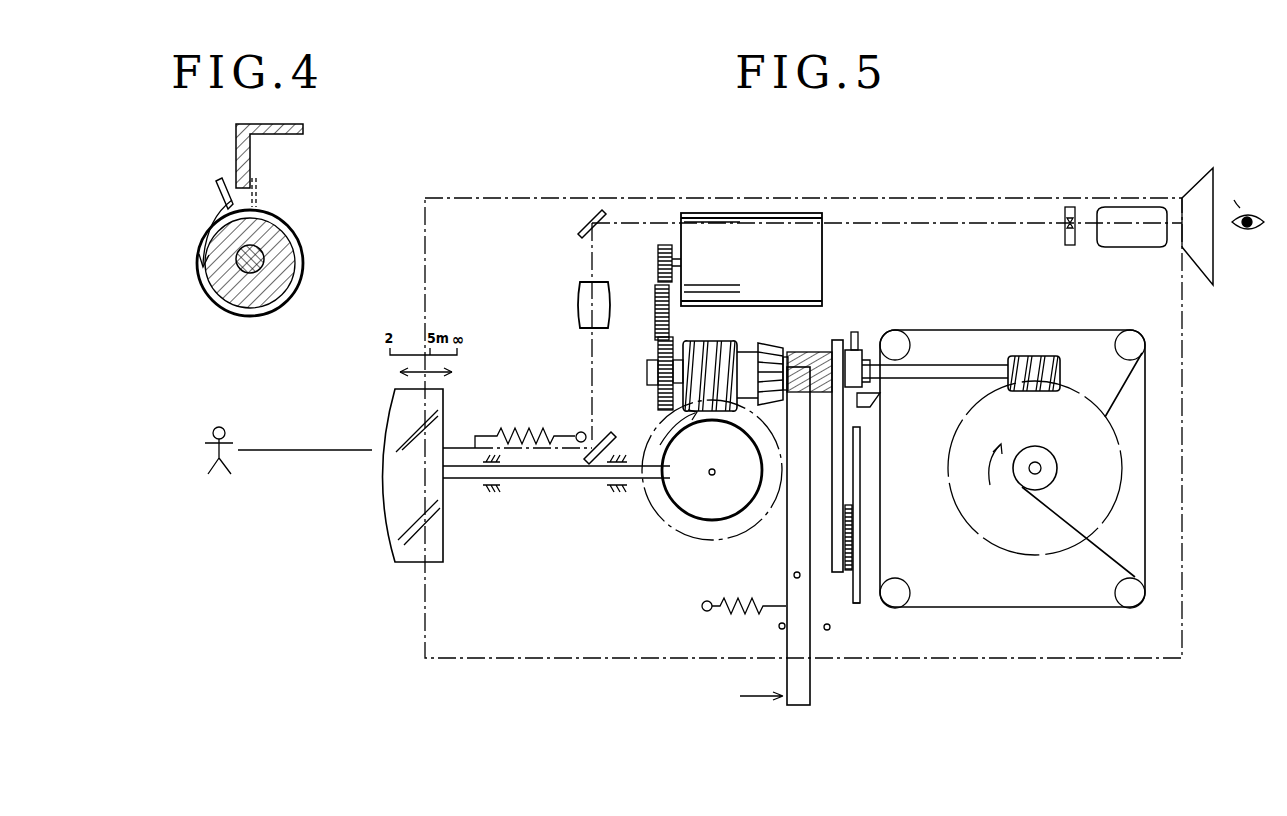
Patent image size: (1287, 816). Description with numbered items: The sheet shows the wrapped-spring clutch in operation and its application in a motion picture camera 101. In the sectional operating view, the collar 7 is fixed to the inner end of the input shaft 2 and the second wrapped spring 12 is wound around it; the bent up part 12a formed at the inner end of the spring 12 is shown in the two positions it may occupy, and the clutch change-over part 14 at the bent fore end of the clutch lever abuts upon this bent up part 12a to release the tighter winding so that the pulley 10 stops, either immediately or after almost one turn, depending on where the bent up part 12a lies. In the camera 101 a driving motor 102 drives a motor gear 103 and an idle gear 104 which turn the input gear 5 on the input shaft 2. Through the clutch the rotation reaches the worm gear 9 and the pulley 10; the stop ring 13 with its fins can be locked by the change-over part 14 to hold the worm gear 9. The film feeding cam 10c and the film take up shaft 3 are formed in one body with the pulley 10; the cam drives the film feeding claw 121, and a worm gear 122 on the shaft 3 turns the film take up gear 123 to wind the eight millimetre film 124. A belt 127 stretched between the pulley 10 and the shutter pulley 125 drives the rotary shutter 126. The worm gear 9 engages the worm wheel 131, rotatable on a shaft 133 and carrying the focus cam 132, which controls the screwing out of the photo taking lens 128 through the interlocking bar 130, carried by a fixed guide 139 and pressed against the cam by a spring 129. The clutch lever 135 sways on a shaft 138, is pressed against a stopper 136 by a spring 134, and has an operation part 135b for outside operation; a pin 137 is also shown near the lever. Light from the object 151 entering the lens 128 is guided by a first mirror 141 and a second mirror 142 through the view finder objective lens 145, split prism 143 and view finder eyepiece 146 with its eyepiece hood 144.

In FIG. 4, the input shaft 2 is at (250, 273).
In FIG. 4, the collar 7 is at (275, 287).
In FIG. 4, the second wrapped spring 12 is at (306, 267).
In FIG. 5, the second wrapped spring 12 is at (838, 345).
In FIG. 4, the bent up part 12a is at (215, 184).
In FIG. 4, the clutch change-over part 14 is at (238, 168).
In FIG. 5, the clutch change-over part 14 is at (798, 372).
In FIG. 5, the output shaft 3 is at (960, 372).
In FIG. 5, the input gear 5 is at (660, 355).
In FIG. 5, the worm gear 9 is at (722, 355).
In FIG. 5, the pulley 10 is at (851, 350).
In FIG. 5, the film feeding cam 10c is at (866, 362).
In FIG. 5, the stop ring 13 is at (760, 350).
In FIG. 5, the motion picture camera 101 is at (489, 197).
In FIG. 5, the driving motor 102 is at (762, 236).
In FIG. 5, the motor gear 103 is at (665, 245).
In FIG. 5, the idle gear 104 is at (655, 300).
In FIG. 5, the film feeding claw 121 is at (880, 400).
In FIG. 5, the worm gear 122 is at (1038, 356).
In FIG. 5, the film take up gear 123 is at (1080, 410).
In FIG. 5, the 8 mm film 124 is at (1035, 607).
In FIG. 5, the shutter pulley 125 is at (852, 540).
In FIG. 5, the rotary shutter 126 is at (858, 603).
In FIG. 5, the belt 127 is at (860, 458).
In FIG. 5, the photo taking lens 128 is at (385, 430).
In FIG. 5, the spring 129 is at (522, 432).
In FIG. 5, the interlocking bar 130 is at (550, 478).
In FIG. 5, the worm wheel 131 is at (660, 508).
In FIG. 5, the focus cam 132 is at (700, 520).
In FIG. 5, the shaft 133 is at (712, 475).
In FIG. 5, the spring 134 is at (725, 614).
In FIG. 5, the clutch lever 135 is at (787, 520).
In FIG. 5, the operation part 135b is at (786, 705).
In FIG. 5, the stopper 136 is at (781, 629).
In FIG. 5, the pin 137 is at (828, 630).
In FIG. 5, the shaft 138 is at (800, 577).
In FIG. 5, the fixed guide 139 is at (490, 492).
In FIG. 5, the first mirror 141 is at (605, 440).
In FIG. 5, the second mirror 142 is at (592, 222).
In FIG. 5, the split prism 143 is at (1070, 207).
In FIG. 5, the eyepiece hood 144 is at (1213, 190).
In FIG. 5, the objective lens 145 is at (578, 300).
In FIG. 5, the view finder eyepiece 146 is at (1135, 208).
In FIG. 5, the object 151 is at (217, 478).